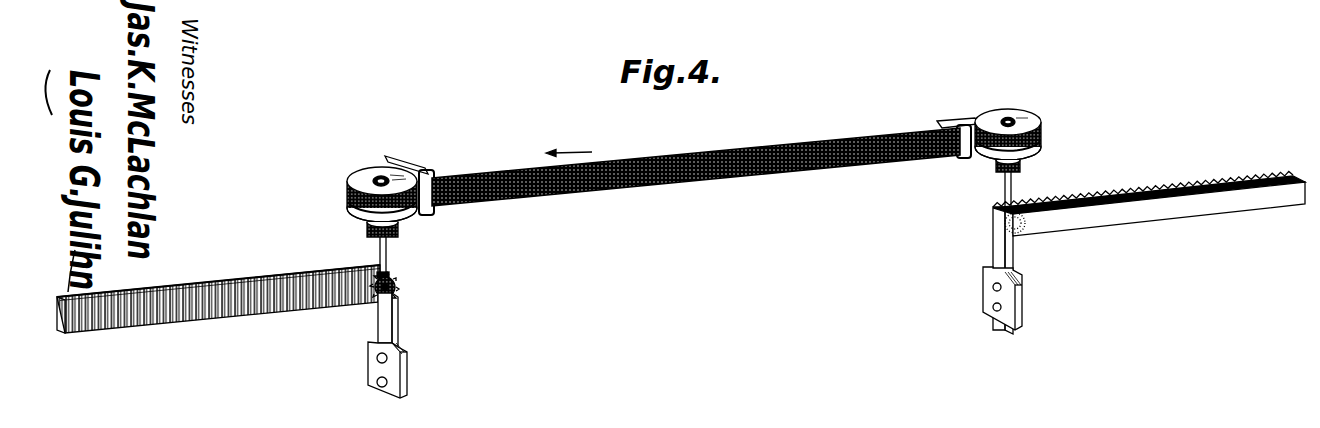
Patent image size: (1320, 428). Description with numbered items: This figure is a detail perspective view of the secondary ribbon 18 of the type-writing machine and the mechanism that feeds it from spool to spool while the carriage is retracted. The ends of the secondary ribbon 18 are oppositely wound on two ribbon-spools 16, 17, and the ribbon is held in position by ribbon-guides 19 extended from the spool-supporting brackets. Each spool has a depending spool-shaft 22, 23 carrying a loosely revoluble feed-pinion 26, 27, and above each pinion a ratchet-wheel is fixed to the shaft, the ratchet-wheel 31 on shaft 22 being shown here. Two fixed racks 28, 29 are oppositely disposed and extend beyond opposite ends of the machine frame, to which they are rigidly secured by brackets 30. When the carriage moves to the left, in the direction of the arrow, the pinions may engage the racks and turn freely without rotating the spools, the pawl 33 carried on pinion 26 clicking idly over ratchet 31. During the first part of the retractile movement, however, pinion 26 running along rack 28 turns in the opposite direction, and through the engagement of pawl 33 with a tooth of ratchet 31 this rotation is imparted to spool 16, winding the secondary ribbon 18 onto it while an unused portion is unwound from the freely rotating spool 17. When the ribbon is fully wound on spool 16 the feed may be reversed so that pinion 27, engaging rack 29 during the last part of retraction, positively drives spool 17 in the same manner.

The ribbon-spool 16 is at (356, 182).
The ribbon-spool 17 is at (1030, 112).
The secondary ribbon 18 is at (683, 178).
The ribbon-guide 19 is at (436, 210).
The spool-shaft 22 is at (390, 248).
The spool-shaft 23 is at (1013, 184).
The feed-pinion 26 is at (398, 287).
The feed-pinion 27 is at (994, 220).
The rack 28 is at (244, 310).
The rack 29 is at (1121, 215).
The bracket 30 is at (397, 336).
The ratchet-wheel 31 is at (391, 276).
The pawl 33 is at (398, 283).